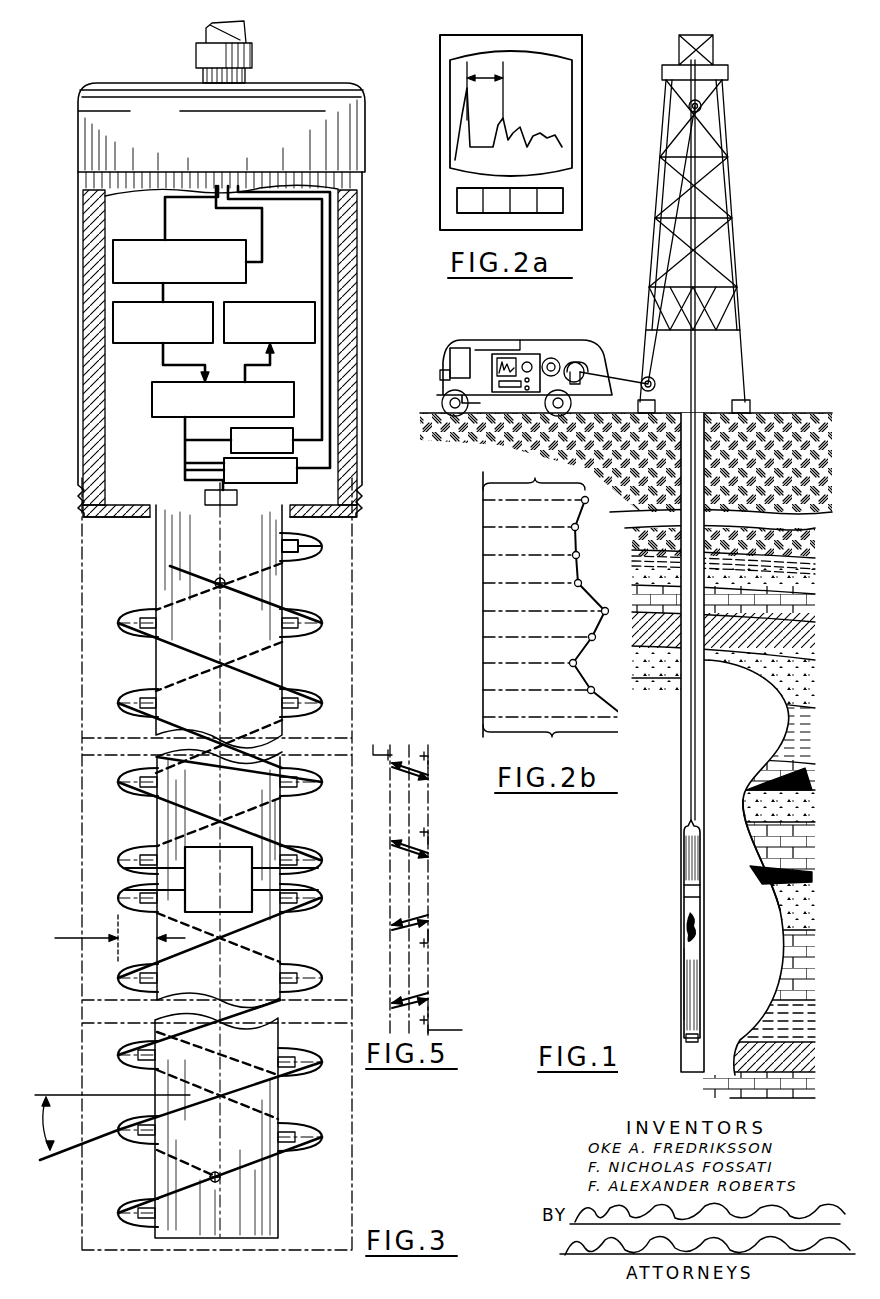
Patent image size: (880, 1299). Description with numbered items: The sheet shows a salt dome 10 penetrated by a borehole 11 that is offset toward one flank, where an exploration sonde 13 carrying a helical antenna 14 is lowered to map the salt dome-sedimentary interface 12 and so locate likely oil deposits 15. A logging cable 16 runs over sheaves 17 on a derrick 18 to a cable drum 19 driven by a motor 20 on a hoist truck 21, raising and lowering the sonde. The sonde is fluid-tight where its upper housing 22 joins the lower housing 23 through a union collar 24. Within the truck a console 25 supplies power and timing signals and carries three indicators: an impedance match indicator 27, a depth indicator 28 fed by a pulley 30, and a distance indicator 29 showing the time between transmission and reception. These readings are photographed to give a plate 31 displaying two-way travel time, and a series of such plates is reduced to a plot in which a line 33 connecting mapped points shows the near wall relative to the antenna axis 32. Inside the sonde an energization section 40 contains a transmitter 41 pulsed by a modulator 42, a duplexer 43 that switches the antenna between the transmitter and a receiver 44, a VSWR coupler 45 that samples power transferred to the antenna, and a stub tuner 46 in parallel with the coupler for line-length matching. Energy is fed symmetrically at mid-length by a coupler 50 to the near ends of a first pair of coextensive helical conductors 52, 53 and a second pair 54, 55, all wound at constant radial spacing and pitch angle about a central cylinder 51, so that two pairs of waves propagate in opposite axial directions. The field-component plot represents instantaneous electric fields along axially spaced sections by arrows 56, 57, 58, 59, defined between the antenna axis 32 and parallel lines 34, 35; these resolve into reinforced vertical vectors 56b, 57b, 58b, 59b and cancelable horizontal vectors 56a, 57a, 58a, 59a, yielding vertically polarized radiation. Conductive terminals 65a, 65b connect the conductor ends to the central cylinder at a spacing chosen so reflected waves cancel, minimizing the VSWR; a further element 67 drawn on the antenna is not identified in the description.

In FIG. 1, the salt dome 10 is at (746, 701).
In FIG. 1, the borehole 11 is at (681, 708).
In FIG. 1, the salt dome-sedimentary interface 12 is at (778, 908).
In FIG. 1, the exploration sonde 13 is at (683, 988).
In FIG. 3, the helical antenna 14 is at (100, 703).
In FIG. 1, the helical antenna 14 is at (702, 930).
In FIG. 1, the oil deposits 15 is at (778, 792).
In FIG. 3, the logging cable 16 is at (205, 34).
In FIG. 1, the logging cable 16 is at (700, 746).
In FIG. 1, the sheaves 17 is at (700, 104).
In FIG. 1, the derrick 18 is at (732, 268).
In FIG. 1, the cable drum 19 is at (551, 358).
In FIG. 1, the motor 20 is at (557, 360).
In FIG. 1, the hoist truck 21 is at (450, 343).
In FIG. 3, the upper housing 22 is at (358, 328).
In FIG. 1, the upper housing 22 is at (690, 855).
In FIG. 1, the lower housing 23 is at (692, 1008).
In FIG. 1, the union collar 24 is at (688, 893).
In FIG. 1, the console 25 is at (510, 352).
In FIG. 1, the impedance match indicator 27 is at (527, 361).
In FIG. 2A, the depth indicator 28 is at (563, 200).
In FIG. 1, the depth indicator 28 is at (500, 386).
In FIG. 2A, the distance indicator 29 is at (571, 100).
In FIG. 1, the distance indicator 29 is at (498, 360).
In FIG. 1, the pulley 30 is at (580, 370).
In FIG. 2A, the photographic plate 31 is at (438, 72).
In FIG. 2B, the antenna axis 32 is at (483, 618).
In FIG. 5, the antenna axis 32 is at (410, 736).
In FIG. 2B, the line 33 is at (608, 607).
In FIG. 5, the parallel line 34 is at (457, 1030).
In FIG. 5, the parallel line 35 is at (379, 742).
In FIG. 3, the energization section 40 is at (298, 228).
In FIG. 3, the transmitter 41 is at (138, 345).
In FIG. 3, the modulator 42 is at (147, 240).
In FIG. 3, the duplexer 43 is at (165, 418).
In FIG. 3, the receiver 44 is at (291, 302).
In FIG. 3, the VSWR coupler 45 is at (294, 434).
In FIG. 3, the stub tuner 46 is at (298, 463).
In FIG. 3, the coupler 50 is at (252, 860).
In FIG. 3, the central cylinder 51 is at (150, 873).
In FIG. 3, the helical conductor 52 is at (305, 640).
In FIG. 3, the helical conductor 53 is at (180, 650).
In FIG. 3, the helical conductor 54 is at (304, 968).
In FIG. 3, the helical conductor 55 is at (195, 948).
In FIG. 5, the electric field component arrow 56 is at (427, 768).
In FIG. 5, the horizontal electric field vector 56a is at (428, 757).
In FIG. 5, the vertical field vector 56b is at (428, 773).
In FIG. 5, the electric field component arrow 57 is at (426, 847).
In FIG. 5, the horizontal electric field vector 57a is at (428, 833).
In FIG. 5, the vertical field vector 57b is at (428, 852).
In FIG. 5, the electric field component arrow 58 is at (405, 910).
In FIG. 5, the horizontal electric field vector 58a is at (428, 943).
In FIG. 5, the vertical field vector 58b is at (430, 925).
In FIG. 5, the electric field component arrow 59 is at (405, 988).
In FIG. 5, the horizontal electric field vector 59a is at (428, 1020).
In FIG. 5, the vertical field vector 59b is at (430, 1003).
In FIG. 3, the terminal 65a is at (303, 553).
In FIG. 3, the terminal 65b is at (170, 566).
In FIG. 3, the hidden coil turn 67 is at (200, 684).